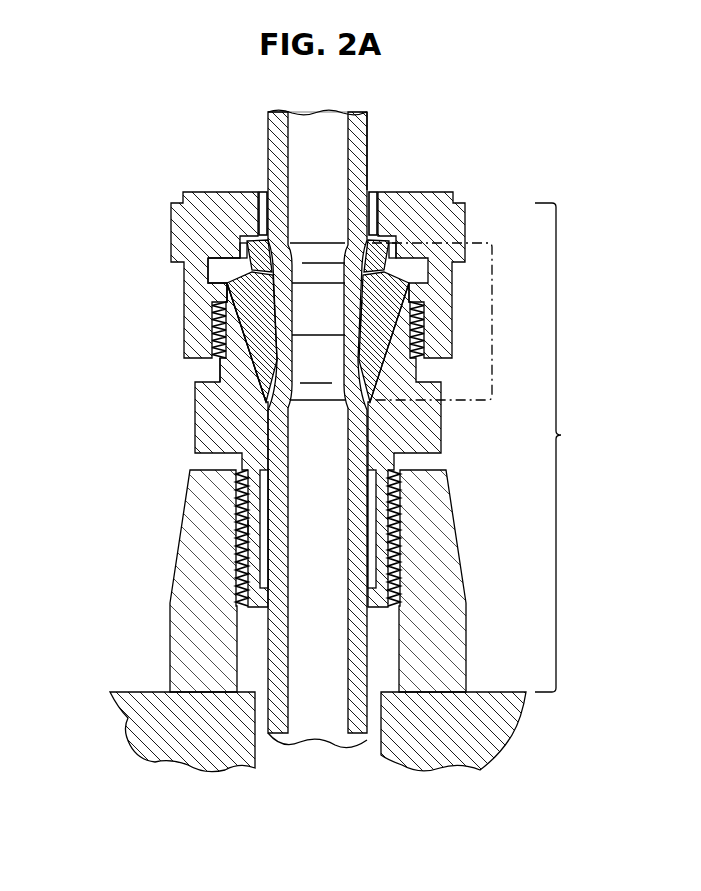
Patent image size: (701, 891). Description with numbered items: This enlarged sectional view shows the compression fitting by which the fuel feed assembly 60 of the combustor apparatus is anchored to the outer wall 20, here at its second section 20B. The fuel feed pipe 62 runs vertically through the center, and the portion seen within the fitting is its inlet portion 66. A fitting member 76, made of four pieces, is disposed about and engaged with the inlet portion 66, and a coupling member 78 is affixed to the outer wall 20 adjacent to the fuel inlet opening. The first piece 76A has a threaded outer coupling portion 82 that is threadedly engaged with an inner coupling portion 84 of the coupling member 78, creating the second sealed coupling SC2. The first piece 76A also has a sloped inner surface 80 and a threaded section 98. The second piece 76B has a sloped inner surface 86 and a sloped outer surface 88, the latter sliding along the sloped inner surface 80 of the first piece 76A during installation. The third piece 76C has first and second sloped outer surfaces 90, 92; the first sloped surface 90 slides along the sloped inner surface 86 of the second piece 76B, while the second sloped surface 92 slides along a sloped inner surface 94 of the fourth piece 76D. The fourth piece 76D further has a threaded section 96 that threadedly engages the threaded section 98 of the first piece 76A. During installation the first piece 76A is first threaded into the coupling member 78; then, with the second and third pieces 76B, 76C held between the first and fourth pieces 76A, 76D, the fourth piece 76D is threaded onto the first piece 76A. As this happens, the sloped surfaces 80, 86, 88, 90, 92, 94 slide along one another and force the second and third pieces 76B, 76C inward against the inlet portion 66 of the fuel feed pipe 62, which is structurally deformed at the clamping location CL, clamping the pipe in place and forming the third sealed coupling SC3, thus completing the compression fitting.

The outer wall 20 is at (497, 730).
The second section 20B is at (132, 716).
The fuel feed assembly 60 is at (380, 148).
The fuel feed pipe 62 is at (268, 140).
The inlet portion 66 is at (370, 116).
The fitting member 76 is at (562, 447).
The first piece 76A is at (210, 413).
The second piece 76B is at (260, 345).
The third piece 76C is at (263, 259).
The fourth piece 76D is at (185, 225).
The coupling member 78 is at (192, 537).
The sloped inner surface 80 is at (291, 396).
The threaded outer coupling portion 82 is at (238, 485).
The inner coupling portion 84 is at (245, 557).
The sloped inner surface 86 is at (212, 288).
The sloped outer surface 88 is at (220, 362).
The first sloped outer surface 90 is at (228, 292).
The second sloped outer surface 92 is at (258, 238).
The sloped inner surface 94 is at (258, 243).
The threaded section 96 is at (237, 322).
The threaded section 98 is at (212, 307).
The second sealed coupling SC2 is at (256, 528).
The third sealed coupling SC3 is at (373, 314).
The clamping location CL is at (492, 318).